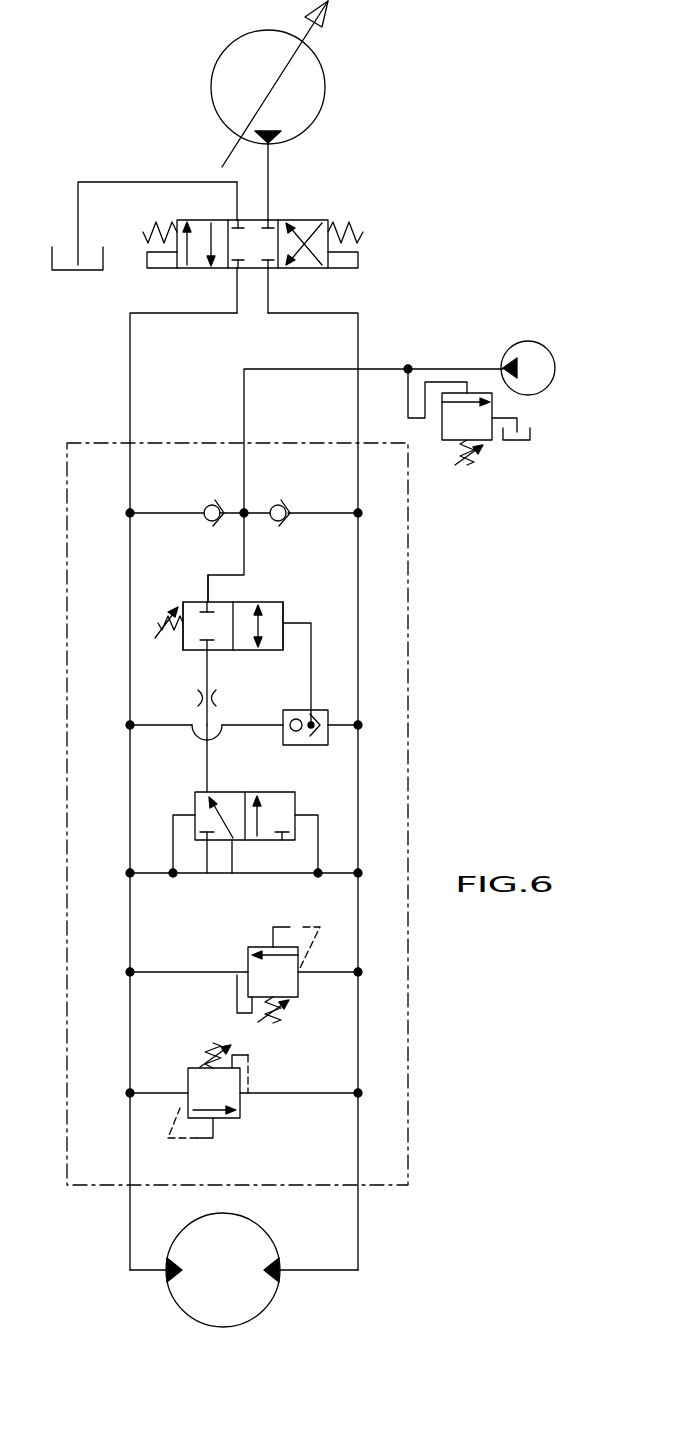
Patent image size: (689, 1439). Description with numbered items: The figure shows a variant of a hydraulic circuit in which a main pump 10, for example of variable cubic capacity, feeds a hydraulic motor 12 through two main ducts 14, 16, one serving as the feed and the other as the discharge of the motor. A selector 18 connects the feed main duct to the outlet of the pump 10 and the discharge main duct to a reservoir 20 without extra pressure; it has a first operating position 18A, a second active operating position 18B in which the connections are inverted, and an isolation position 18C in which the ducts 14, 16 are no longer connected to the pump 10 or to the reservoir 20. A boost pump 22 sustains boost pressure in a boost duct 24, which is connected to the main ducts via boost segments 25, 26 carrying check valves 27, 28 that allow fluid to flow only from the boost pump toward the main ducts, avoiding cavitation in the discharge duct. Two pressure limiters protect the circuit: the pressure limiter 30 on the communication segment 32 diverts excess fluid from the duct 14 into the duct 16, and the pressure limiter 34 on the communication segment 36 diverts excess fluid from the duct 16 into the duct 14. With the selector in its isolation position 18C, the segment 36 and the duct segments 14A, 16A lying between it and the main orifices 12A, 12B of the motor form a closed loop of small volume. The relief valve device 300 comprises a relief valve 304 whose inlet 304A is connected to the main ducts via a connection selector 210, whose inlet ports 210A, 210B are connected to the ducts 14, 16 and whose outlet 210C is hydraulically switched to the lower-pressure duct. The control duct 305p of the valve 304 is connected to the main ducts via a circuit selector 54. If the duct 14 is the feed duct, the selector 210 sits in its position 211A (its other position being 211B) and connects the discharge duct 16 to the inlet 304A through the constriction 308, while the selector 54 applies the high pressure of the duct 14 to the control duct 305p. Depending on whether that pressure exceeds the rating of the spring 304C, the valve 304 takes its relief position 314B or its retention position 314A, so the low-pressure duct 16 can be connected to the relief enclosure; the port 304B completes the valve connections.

The main pump 10 is at (326, 88).
The selector 18 is at (338, 204).
The first operating position 18A is at (293, 268).
The second active operating position 18B is at (218, 268).
The isolation position 18C is at (252, 272).
The reservoir 20 is at (78, 272).
The boost pump 22 is at (527, 341).
The boost duct 24 is at (305, 369).
The boost segment 25 is at (167, 513).
The boost segment 26 is at (308, 513).
The check valve 27 is at (209, 505).
The check valve 28 is at (277, 505).
The pressure limiter 30 is at (188, 1070).
The communication segment 32 is at (300, 1093).
The pressure limiter 34 is at (298, 997).
The communication segment 36 is at (200, 972).
The main duct 14 is at (128, 922).
The main duct 16 is at (358, 951).
The segment of duct 14 14A is at (130, 1232).
The segment of duct 16 16A is at (358, 1213).
The hydraulic motor 12 is at (270, 1296).
The main orifice of the motor 12A is at (166, 1274).
The main orifice of the motor 12B is at (283, 1262).
The relief valve device 300 is at (384, 692).
The relief valve 304 is at (250, 602).
The inlet 304A is at (197, 650).
The valve port 304B is at (205, 602).
The spring 304C is at (152, 617).
The retention position 314A is at (183, 602).
The relief position 314B is at (285, 608).
The control duct 305p is at (311, 675).
The constriction 308 is at (195, 699).
The circuit selector 54 is at (283, 712).
The connection selector 210 is at (186, 776).
The inlet port 210A is at (205, 843).
The inlet port 210B is at (235, 843).
The outlet 210C is at (207, 792).
The position of selector 210 211A is at (195, 795).
The pilot line 211B is at (295, 800).